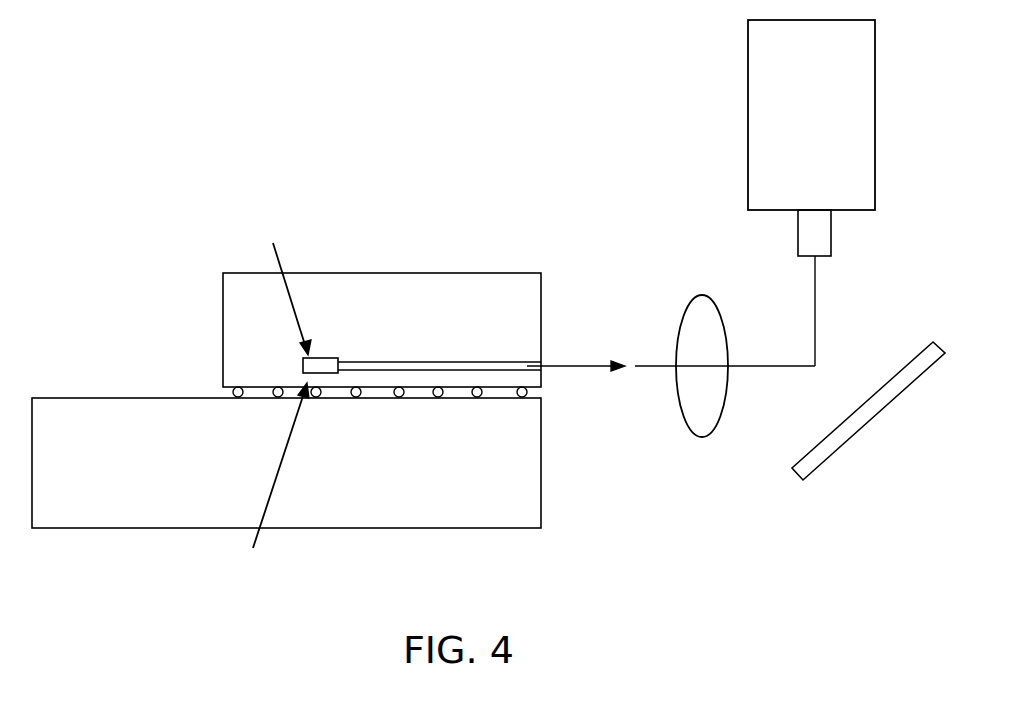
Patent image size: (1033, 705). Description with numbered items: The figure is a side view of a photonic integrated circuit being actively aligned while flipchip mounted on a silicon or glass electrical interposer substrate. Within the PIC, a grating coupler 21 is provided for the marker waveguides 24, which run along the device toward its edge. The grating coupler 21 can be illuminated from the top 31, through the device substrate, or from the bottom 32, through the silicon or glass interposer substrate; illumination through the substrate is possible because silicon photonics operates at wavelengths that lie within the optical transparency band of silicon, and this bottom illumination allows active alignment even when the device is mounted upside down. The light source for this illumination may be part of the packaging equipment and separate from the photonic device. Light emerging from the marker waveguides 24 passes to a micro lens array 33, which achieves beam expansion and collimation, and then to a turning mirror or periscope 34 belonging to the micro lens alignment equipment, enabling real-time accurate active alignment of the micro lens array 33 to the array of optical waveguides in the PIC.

The grating coupler 21 is at (285, 361).
The marker waveguides 24 is at (377, 305).
The top illumination 31 is at (262, 259).
The bottom illumination 32 is at (240, 516).
The micro lens array 33 is at (671, 443).
The turning mirror or periscope 34 is at (873, 443).